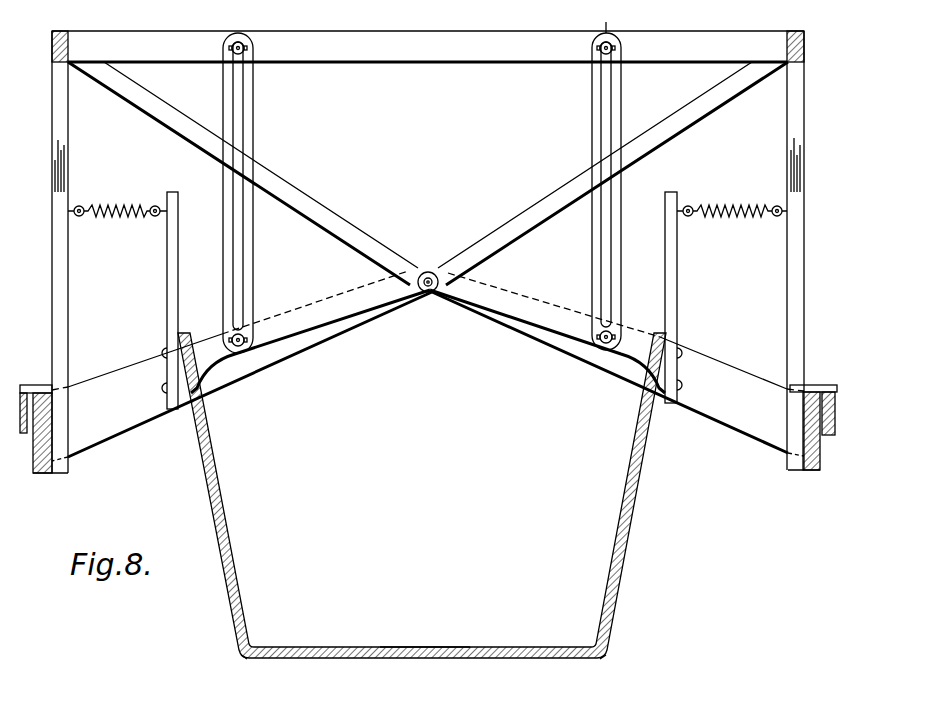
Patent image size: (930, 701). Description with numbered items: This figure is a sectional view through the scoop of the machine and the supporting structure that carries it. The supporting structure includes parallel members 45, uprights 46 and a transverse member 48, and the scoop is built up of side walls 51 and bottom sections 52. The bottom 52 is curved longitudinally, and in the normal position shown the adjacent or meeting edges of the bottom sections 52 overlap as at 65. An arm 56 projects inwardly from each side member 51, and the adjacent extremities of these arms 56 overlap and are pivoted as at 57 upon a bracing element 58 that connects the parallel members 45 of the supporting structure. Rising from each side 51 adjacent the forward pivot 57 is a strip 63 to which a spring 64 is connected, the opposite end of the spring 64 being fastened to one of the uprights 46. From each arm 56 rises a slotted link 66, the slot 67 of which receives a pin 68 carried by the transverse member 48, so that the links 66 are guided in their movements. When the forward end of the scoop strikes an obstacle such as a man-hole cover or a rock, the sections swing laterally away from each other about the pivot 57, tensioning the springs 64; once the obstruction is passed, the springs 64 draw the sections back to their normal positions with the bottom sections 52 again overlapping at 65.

The parallel members 45 is at (43, 473).
The uprights 46 is at (60, 336).
The transverse member 48 is at (428, 46).
The side wall 51 is at (230, 613).
The bottom section 52 is at (307, 660).
The arm 56 is at (477, 302).
The pivot 57 is at (428, 271).
The bracing element 58 is at (140, 420).
The strip 63 is at (167, 277).
The spring 64 is at (118, 222).
The overlap 65 is at (417, 652).
The slotted link 66 is at (602, 262).
The slot 67 is at (596, 105).
The pin 68 is at (613, 41).